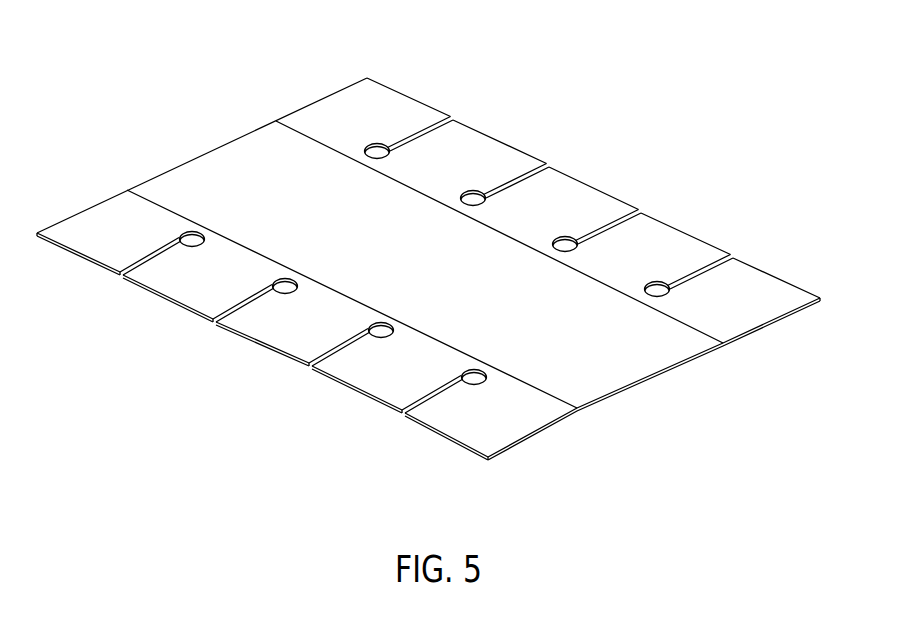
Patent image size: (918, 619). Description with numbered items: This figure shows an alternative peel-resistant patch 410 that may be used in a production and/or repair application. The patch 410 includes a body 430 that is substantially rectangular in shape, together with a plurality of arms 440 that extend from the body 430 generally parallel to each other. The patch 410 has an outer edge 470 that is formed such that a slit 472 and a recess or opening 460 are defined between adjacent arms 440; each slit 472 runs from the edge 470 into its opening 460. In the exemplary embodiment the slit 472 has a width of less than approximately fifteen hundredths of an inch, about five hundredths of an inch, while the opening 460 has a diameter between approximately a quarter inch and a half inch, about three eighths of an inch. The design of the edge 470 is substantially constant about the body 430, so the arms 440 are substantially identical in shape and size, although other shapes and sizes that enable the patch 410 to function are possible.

The patch 410 is at (428, 260).
The body 430 is at (481, 287).
The arms 440 is at (418, 92).
The opening 460 is at (370, 162).
The outer edge 470 is at (378, 82).
The slit 472 is at (425, 137).